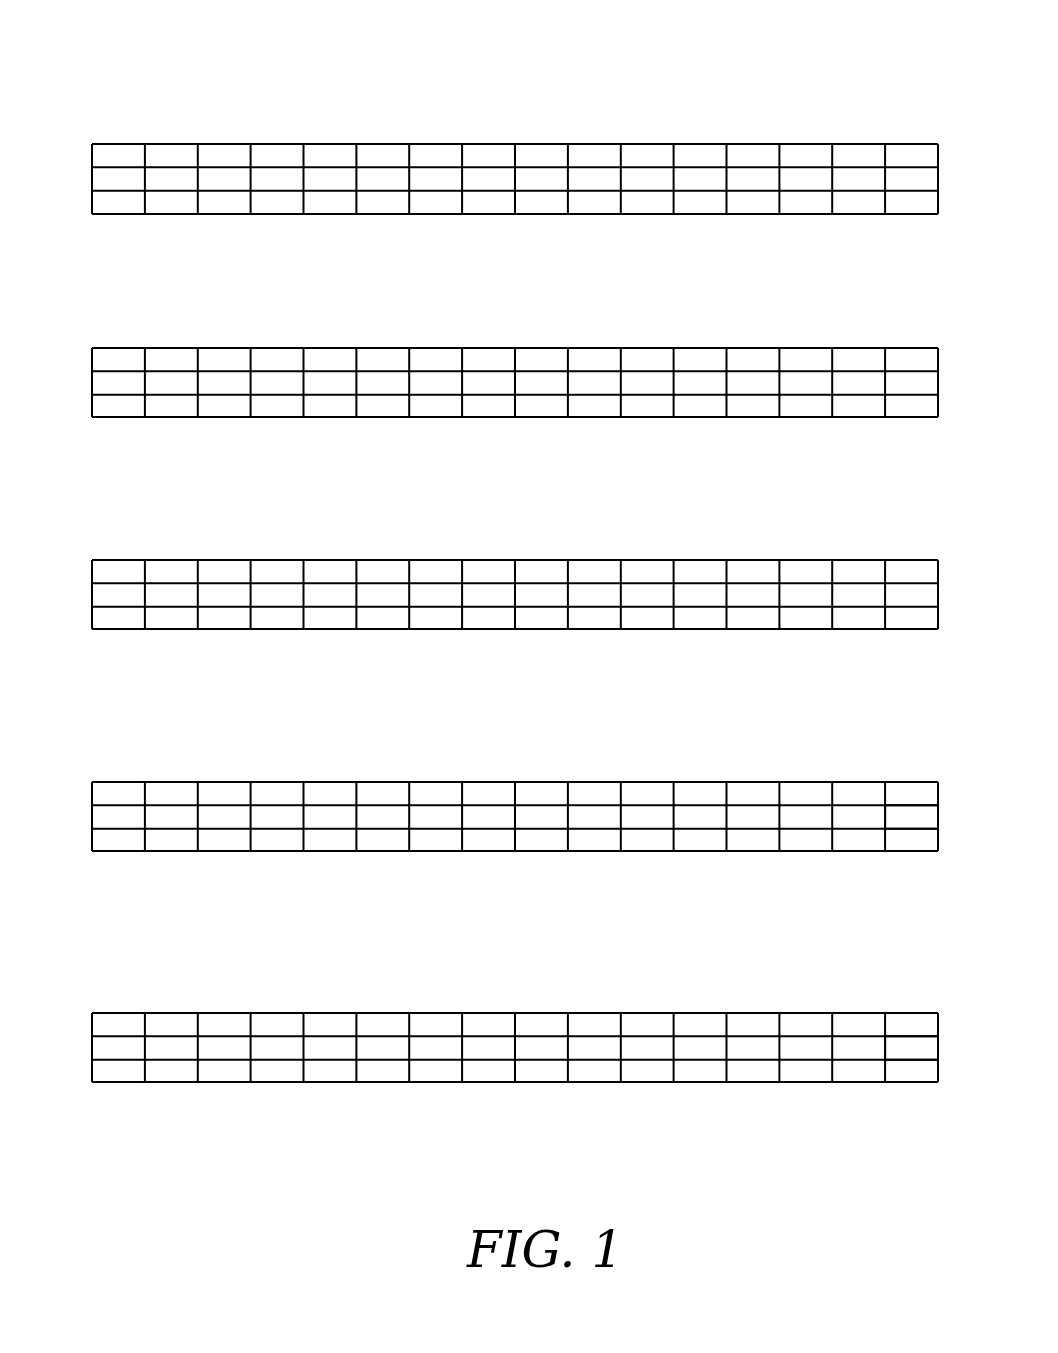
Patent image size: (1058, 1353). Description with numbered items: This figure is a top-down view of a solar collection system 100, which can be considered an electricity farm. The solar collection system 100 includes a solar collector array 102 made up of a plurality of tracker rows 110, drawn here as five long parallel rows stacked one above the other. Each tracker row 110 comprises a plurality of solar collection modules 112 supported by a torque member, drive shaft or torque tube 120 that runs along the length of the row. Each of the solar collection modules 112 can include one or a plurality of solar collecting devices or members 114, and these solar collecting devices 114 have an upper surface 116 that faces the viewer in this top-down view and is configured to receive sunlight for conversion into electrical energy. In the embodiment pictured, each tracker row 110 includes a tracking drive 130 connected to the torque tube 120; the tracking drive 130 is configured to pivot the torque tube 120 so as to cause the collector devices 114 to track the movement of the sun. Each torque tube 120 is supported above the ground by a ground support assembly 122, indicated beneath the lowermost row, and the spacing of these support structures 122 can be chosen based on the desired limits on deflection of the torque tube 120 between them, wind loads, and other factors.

The solar collection system 100 is at (165, 76).
The solar collector array 102 is at (282, 107).
The tracker row 110 is at (491, 306).
The solar collection module 112 is at (218, 1083).
The solar collecting device 114 is at (119, 1047).
The upper surface 116 is at (223, 593).
The torque tube 120 is at (904, 815).
The ground support assembly 122 is at (389, 1088).
The tracking drive 130 is at (546, 232).